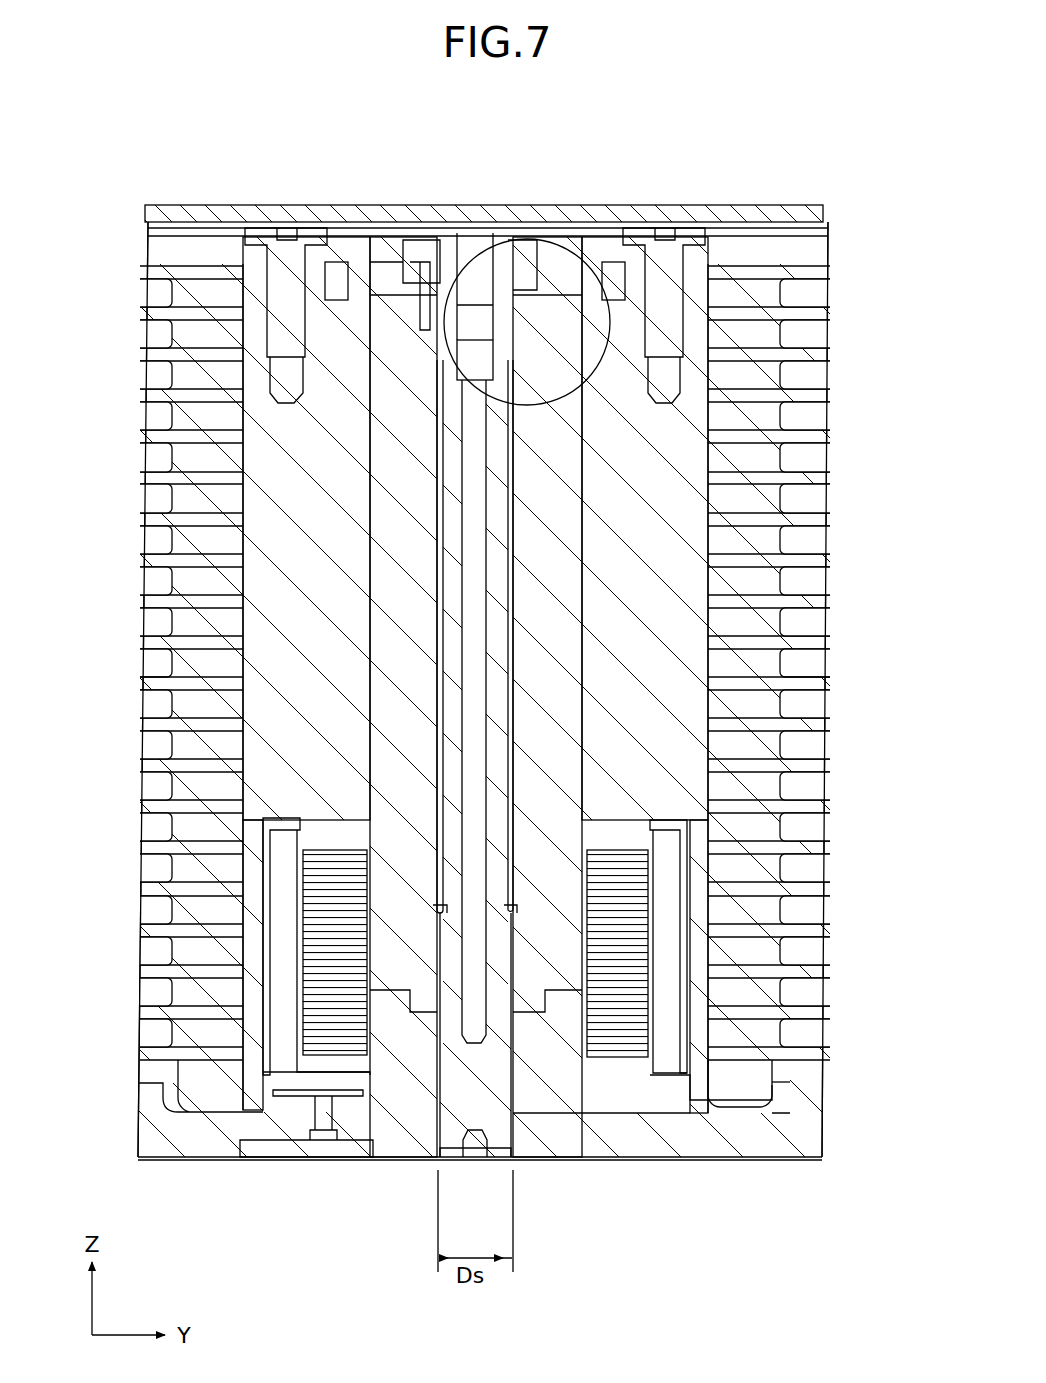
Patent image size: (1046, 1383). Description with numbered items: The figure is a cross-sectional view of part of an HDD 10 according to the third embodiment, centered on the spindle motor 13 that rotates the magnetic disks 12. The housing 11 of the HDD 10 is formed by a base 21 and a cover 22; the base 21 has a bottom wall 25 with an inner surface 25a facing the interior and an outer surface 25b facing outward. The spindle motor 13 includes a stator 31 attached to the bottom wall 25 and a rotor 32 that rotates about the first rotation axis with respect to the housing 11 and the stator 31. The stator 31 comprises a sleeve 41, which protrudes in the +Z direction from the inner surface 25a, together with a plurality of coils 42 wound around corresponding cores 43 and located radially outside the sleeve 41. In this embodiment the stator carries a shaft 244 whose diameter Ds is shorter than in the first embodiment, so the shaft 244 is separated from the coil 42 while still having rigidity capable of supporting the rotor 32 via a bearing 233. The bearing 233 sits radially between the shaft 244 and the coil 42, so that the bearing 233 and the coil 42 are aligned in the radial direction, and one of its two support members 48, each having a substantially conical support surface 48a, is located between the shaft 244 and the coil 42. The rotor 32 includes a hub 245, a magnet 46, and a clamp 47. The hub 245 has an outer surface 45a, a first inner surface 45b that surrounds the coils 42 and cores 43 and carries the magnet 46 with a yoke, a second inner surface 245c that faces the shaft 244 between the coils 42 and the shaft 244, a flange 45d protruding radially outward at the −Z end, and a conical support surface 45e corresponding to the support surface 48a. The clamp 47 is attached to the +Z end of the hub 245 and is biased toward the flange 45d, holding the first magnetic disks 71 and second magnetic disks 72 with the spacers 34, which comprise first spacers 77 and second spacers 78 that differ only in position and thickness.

The HDD 10 is at (451, 635).
The housing 11 is at (158, 203).
The magnetic disk 12 is at (816, 661).
The spindle motor 13 is at (488, 185).
The base 21 is at (518, 1134).
The cover 22 is at (208, 207).
The bottom wall 25 is at (518, 1134).
The inner surface 25a is at (790, 1082).
The outer surface 25b is at (697, 1158).
The stator 31 is at (615, 1100).
The rotor 32 is at (733, 210).
The spacer 34 is at (532, 688).
The sleeve 41 is at (555, 1060).
The coil 42 is at (652, 1076).
The core 43 is at (625, 910).
The outer surface 45a is at (712, 540).
The first inner surface 45b is at (305, 945).
The flange 45d is at (208, 1088).
The support surface 45e is at (527, 345).
The magnet 46 is at (323, 1142).
The clamp 47 is at (250, 252).
The support member 48 is at (475, 676).
The support surface 48a is at (530, 1070).
The first magnetic disk 71 is at (800, 1040).
The second magnetic disk 72 is at (810, 313).
The first spacer 77 is at (773, 948).
The second spacer 78 is at (770, 330).
The bearing 233 is at (475, 636).
The shaft 244 is at (595, 355).
The hub 245 is at (671, 590).
The second inner surface 245c is at (462, 330).